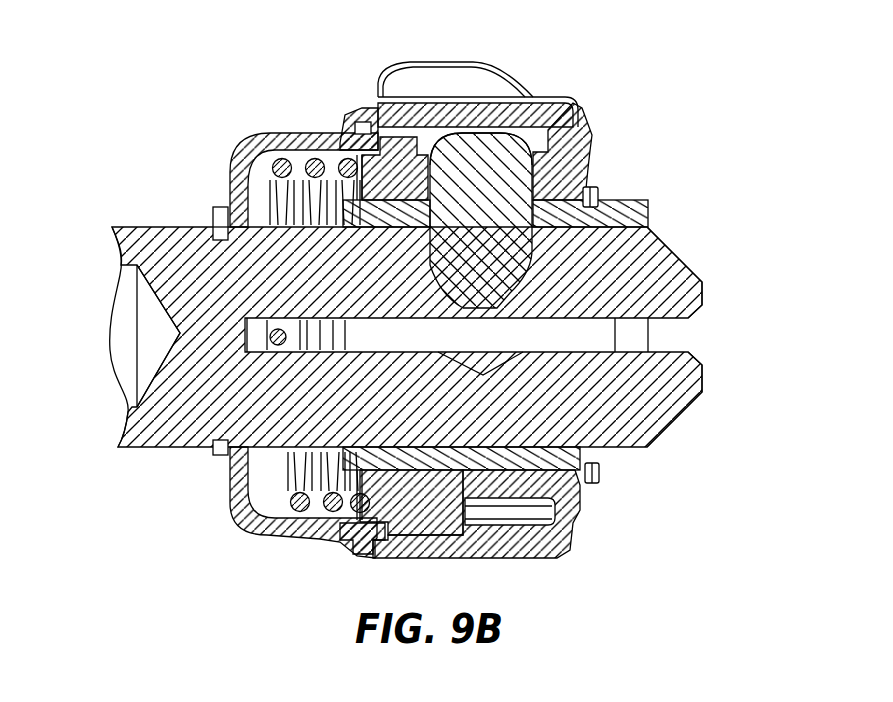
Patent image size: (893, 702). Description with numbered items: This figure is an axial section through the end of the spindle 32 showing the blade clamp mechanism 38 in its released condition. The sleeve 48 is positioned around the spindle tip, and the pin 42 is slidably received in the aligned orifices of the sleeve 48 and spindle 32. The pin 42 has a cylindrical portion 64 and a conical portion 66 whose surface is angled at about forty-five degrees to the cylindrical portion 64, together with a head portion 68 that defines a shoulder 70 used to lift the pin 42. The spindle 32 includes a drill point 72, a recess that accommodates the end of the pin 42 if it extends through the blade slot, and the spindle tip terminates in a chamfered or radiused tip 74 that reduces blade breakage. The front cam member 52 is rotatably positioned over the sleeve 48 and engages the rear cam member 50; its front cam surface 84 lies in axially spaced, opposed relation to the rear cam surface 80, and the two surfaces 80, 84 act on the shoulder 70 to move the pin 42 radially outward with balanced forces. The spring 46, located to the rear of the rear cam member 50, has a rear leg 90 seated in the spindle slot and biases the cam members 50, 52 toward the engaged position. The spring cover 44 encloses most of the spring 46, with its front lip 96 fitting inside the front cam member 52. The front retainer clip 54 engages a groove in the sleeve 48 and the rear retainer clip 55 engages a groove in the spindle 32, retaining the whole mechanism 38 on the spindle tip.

The spindle 32 is at (123, 227).
The blade clamp mechanism 38 is at (230, 552).
The pin 42 is at (515, 260).
The spring cover 44 is at (233, 165).
The spring 46 is at (283, 160).
The sleeve 48 is at (623, 205).
The rear cam member 50 is at (423, 512).
The front cam member 52 is at (577, 512).
The front retainer clip 54 is at (597, 483).
The rear retainer clip 55 is at (213, 215).
The cylindrical portion 64 is at (430, 252).
The conical portion 66 is at (532, 307).
The head portion 68 is at (478, 132).
The shoulder 70 is at (545, 168).
The drill point 72 is at (498, 372).
The chamfered or radiused tip 74 is at (697, 357).
The rear cam surface 80 is at (448, 148).
The front cam surface 84 is at (518, 127).
The rear leg 90 is at (247, 333).
The front lip 96 is at (362, 160).